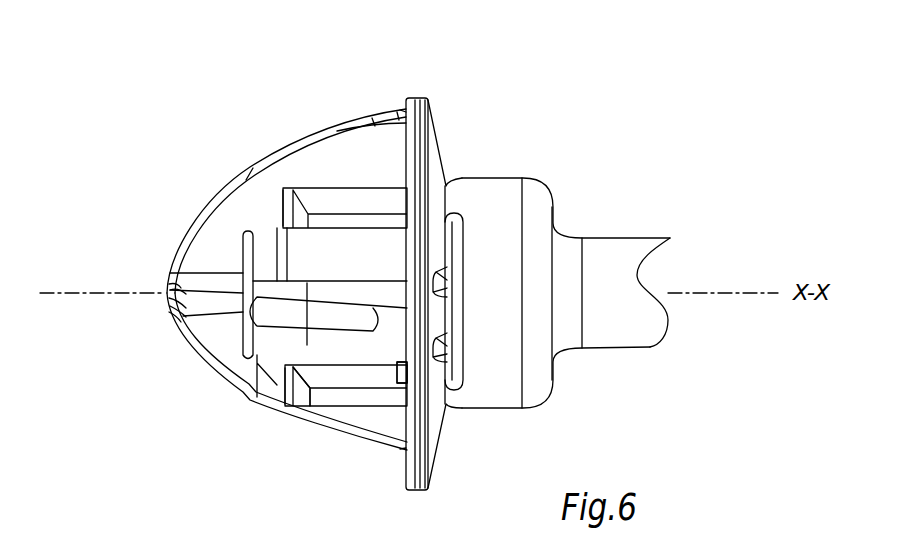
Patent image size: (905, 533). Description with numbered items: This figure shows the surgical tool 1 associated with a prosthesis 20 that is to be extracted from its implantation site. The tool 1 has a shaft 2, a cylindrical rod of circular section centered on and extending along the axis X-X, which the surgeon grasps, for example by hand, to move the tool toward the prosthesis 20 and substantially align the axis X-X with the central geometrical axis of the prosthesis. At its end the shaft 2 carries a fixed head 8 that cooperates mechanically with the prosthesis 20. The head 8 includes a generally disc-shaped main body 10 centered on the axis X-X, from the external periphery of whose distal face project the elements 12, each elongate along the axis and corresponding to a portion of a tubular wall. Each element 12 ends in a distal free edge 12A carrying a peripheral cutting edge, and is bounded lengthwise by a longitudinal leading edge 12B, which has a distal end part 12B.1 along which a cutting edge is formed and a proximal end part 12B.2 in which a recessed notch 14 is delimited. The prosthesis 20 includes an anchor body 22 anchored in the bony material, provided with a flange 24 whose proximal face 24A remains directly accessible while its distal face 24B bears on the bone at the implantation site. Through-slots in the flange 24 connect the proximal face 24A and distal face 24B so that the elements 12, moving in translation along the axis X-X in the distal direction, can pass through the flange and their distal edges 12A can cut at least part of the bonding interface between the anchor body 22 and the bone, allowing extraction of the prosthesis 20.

The surgical tool 1 is at (581, 302).
The shaft 2 is at (676, 237).
The head 8 is at (547, 178).
The main body 10 is at (490, 390).
The element 12 is at (333, 203).
The distal free edge 12A is at (277, 199).
The longitudinal free edge 12B is at (72, 367).
The distal end part 12B.1 is at (328, 363).
The proximal end part 12B.2 is at (400, 362).
The recessed notch 14 is at (400, 362).
The prosthesis 20 is at (250, 165).
The anchor body 22 is at (307, 248).
The flange 24 is at (412, 97).
The proximal face 24A is at (440, 148).
The distal face 24B is at (397, 157).